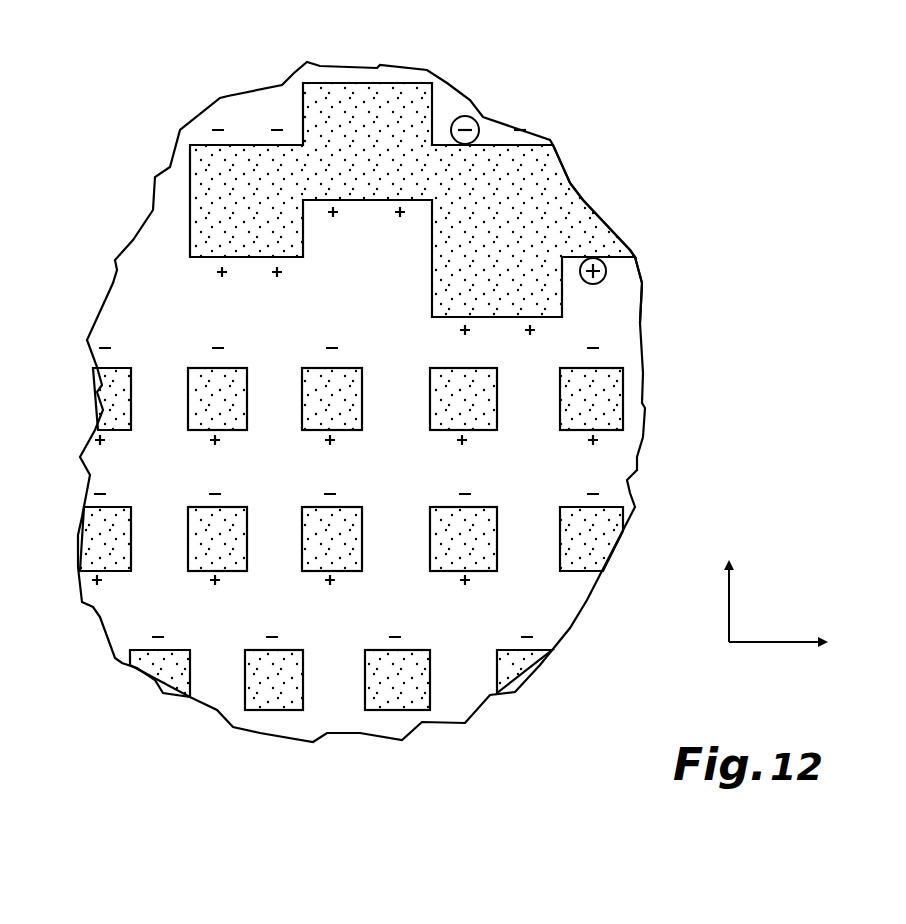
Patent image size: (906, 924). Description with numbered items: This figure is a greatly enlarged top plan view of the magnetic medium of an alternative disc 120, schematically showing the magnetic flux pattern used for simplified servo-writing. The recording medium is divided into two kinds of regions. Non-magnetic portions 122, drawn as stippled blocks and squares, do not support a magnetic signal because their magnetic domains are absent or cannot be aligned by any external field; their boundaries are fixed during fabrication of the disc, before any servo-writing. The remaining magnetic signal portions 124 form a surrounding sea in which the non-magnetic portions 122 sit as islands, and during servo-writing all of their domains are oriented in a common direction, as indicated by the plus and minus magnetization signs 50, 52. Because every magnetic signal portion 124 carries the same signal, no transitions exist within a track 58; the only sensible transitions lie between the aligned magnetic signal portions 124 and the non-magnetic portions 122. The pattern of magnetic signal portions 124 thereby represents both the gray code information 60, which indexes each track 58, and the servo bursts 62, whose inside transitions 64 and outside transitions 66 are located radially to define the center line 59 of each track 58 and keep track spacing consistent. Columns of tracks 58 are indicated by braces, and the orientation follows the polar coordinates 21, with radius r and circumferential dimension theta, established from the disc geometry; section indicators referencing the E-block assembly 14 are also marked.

The alternative disc 120 is at (672, 117).
The non-magnetic portions 122 is at (540, 168).
The magnetic signal portions 124 is at (603, 300).
The magnetization sign 50 is at (606, 269).
The magnetization sign 52 is at (458, 117).
The center line 59 is at (497, 135).
The track 58 is at (187, 112).
The gray code information 60 is at (97, 333).
The servo burst 62 is at (85, 742).
The inside transitions 64 is at (650, 372).
The outside transitions 66 is at (572, 652).
The E-block assembly 14 is at (547, 412).
The polar coordinates 21 is at (729, 628).